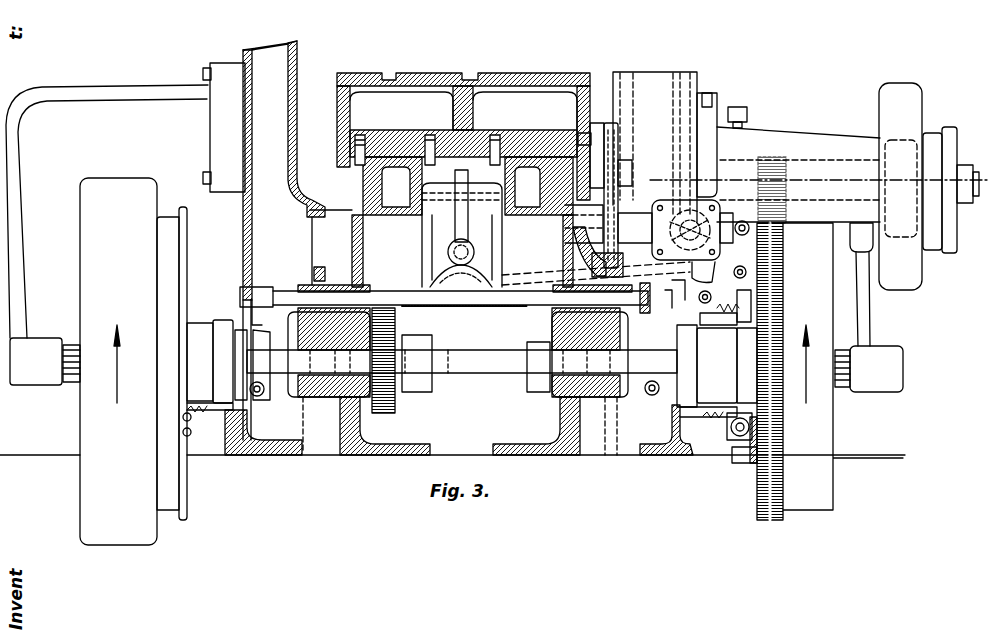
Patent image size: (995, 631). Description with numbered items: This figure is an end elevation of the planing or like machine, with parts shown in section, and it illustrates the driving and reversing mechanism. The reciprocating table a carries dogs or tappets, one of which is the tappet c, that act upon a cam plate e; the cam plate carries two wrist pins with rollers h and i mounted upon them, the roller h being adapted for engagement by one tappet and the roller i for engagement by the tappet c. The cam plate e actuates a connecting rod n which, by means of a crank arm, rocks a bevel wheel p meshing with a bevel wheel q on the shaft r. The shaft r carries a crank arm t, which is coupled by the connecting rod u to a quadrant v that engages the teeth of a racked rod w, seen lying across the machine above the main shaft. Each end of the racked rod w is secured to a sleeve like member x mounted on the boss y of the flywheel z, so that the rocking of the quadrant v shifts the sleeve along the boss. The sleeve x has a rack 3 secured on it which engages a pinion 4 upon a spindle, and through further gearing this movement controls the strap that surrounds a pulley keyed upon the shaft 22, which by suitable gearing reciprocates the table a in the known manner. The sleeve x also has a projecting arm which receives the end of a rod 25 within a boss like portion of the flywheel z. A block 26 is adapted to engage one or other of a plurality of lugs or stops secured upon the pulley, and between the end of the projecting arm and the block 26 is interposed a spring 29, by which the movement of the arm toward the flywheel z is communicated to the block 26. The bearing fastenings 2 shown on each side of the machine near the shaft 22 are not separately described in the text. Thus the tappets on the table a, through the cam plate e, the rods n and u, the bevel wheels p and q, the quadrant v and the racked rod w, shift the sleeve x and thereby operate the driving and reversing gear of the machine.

The reciprocating table a is at (500, 73).
The tappet c is at (596, 168).
The roller h is at (607, 165).
The roller i is at (622, 188).
The cam plate e is at (610, 210).
The bevel wheel p is at (656, 232).
The shaft r is at (702, 228).
The bevel wheel q is at (719, 273).
The crank arm t is at (688, 294).
The connecting rod n is at (573, 257).
The connecting rod u is at (529, 273).
The quadrant v is at (442, 272).
The racked rod w is at (283, 298).
The sleeve like member x is at (462, 363).
The boss y is at (747, 365).
The flywheel z is at (491, 361).
The bolt 2 is at (263, 373).
The rack 3 is at (200, 415).
The pinion 4 is at (188, 428).
The shaft 22 is at (482, 370).
The rod 25 is at (726, 312).
The block 26 is at (742, 316).
The spring 29 is at (728, 320).